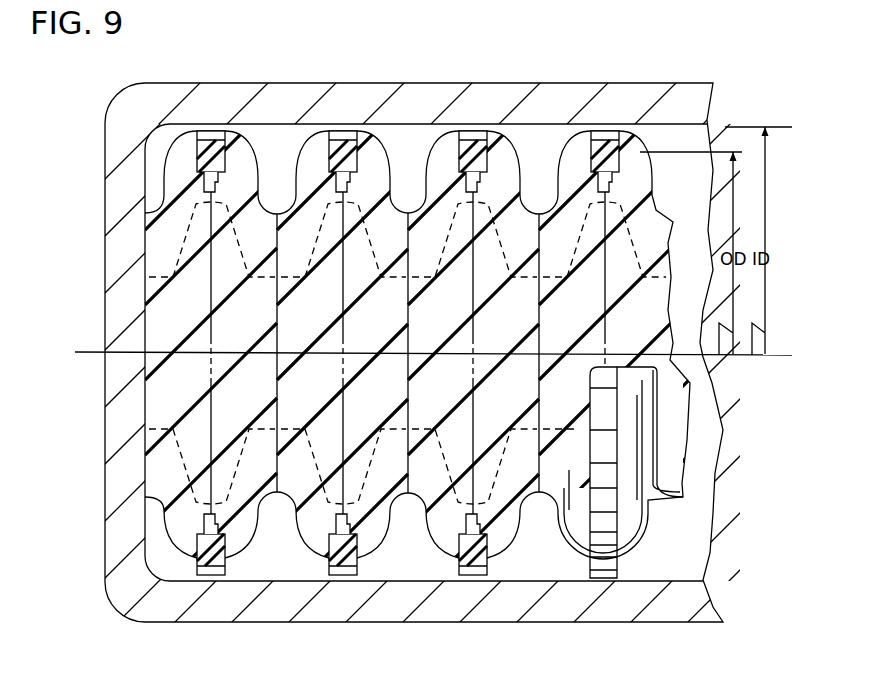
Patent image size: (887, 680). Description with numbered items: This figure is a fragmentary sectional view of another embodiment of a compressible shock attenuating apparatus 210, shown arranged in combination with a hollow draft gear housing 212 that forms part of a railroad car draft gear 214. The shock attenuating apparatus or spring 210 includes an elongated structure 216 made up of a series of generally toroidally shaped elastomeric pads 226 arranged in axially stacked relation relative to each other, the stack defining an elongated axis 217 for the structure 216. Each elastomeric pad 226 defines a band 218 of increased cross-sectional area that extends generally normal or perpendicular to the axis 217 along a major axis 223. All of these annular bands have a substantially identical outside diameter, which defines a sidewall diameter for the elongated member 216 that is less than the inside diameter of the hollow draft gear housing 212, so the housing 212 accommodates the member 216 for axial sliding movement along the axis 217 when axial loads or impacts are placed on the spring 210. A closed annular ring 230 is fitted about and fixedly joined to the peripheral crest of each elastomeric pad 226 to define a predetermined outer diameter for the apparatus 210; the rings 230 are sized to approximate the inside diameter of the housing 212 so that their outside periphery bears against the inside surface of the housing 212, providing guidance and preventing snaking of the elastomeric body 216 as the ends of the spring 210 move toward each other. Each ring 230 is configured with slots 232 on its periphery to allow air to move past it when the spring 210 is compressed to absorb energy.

The compressible shock attenuating apparatus 210 is at (149, 159).
The hollow draft gear housing 212 is at (110, 188).
The railroad car draft gear 214 is at (72, 287).
The elongated structure 216 is at (398, 126).
The elongated axis 217 is at (90, 353).
The band of increased cross-sectional area 218 is at (235, 178).
The major axis 223 is at (210, 277).
The toroidally shaped elastomeric pad 226 is at (152, 545).
The closed annular ring 230 is at (238, 133).
The slot 232 is at (198, 130).